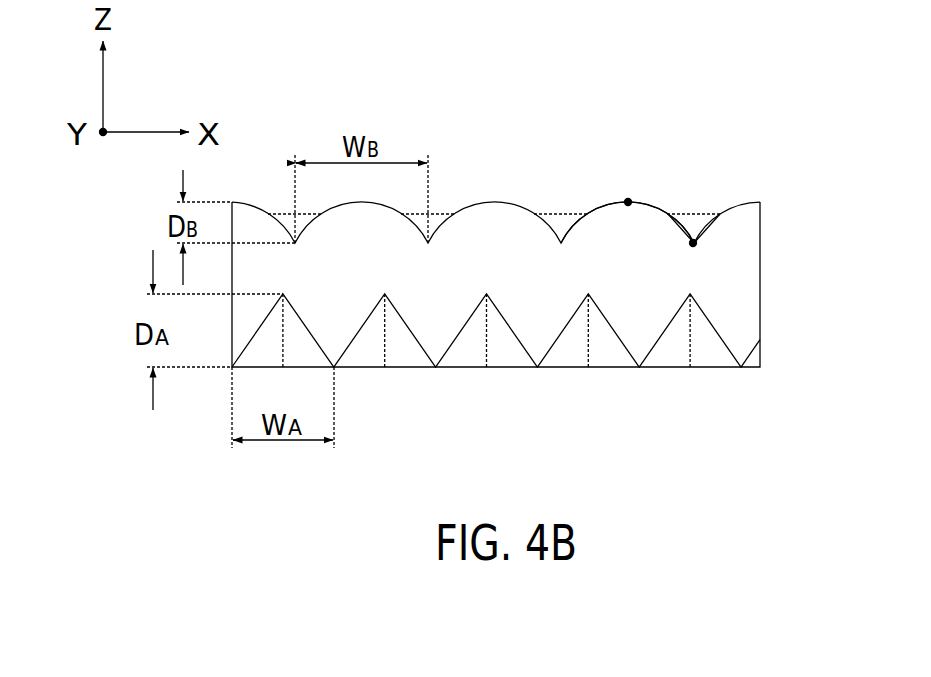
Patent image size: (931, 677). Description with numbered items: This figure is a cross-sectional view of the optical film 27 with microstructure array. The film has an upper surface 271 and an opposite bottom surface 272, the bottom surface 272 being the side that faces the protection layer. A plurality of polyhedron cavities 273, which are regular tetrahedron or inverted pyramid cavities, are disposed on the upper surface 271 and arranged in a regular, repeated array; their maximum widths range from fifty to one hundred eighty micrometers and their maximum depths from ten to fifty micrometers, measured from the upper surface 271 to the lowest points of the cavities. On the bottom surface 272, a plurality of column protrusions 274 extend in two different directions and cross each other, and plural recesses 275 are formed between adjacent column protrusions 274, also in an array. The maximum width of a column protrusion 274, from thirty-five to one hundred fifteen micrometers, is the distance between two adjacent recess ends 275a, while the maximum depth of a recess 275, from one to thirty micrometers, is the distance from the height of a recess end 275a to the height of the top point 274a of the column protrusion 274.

The optical film with microstructure array 27 is at (540, 150).
The upper surface 271 is at (713, 367).
The bottom surface 272 is at (733, 203).
The polyhedron cavities 273 is at (580, 355).
The column protrusions 274 is at (603, 207).
The top point of the column protrusion 274a is at (628, 202).
The recesses 275 is at (693, 225).
The recess end 275a is at (694, 243).